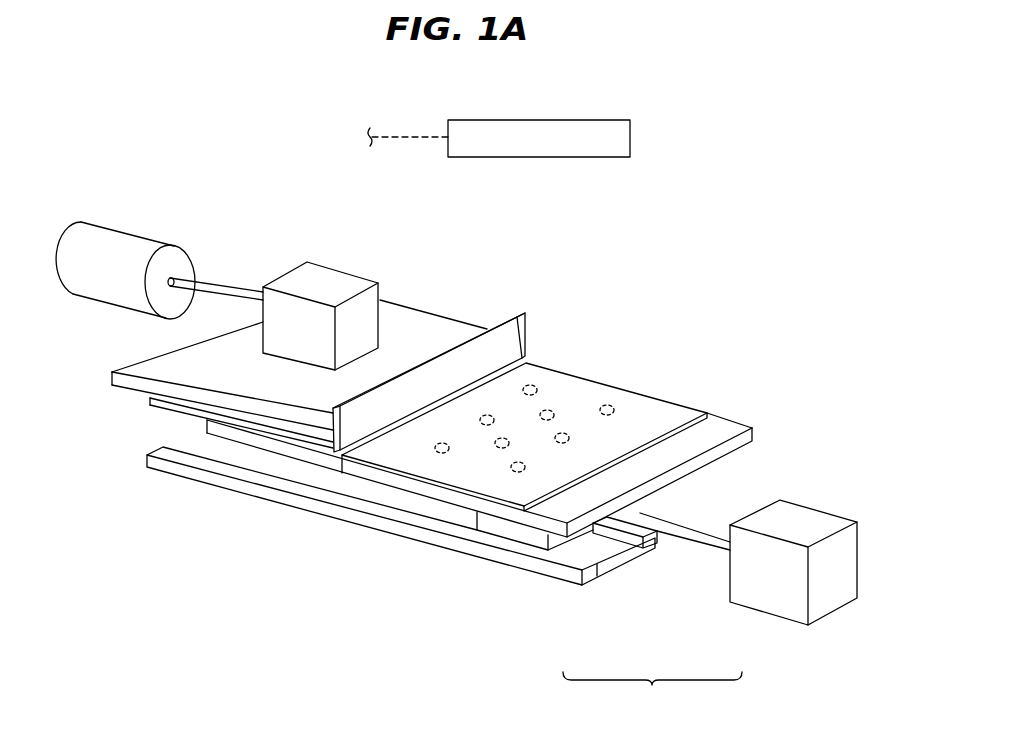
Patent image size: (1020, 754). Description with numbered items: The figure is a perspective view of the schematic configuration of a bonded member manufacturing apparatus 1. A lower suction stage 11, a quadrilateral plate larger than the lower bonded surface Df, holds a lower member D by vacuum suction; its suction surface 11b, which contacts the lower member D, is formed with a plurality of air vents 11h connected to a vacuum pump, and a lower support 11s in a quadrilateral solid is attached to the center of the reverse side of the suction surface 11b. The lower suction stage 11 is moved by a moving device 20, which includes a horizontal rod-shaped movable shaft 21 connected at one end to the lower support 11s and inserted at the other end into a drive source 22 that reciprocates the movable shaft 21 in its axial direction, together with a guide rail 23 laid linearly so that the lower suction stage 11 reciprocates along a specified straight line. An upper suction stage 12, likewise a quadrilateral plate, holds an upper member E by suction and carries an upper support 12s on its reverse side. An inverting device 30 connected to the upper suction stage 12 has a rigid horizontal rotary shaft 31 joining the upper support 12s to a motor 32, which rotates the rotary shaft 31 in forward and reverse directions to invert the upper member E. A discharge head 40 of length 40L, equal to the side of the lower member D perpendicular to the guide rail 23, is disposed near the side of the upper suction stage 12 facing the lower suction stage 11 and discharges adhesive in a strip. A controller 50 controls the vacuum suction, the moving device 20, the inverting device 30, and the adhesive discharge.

The bonded member manufacturing apparatus 1 is at (758, 110).
The controller 50 is at (630, 120).
The inverting device 30 is at (127, 197).
The motor 32 is at (160, 237).
The rotary shaft 31 is at (220, 284).
The upper support 12s is at (346, 268).
The upper suction stage 12 is at (425, 310).
The upper member E is at (158, 407).
The discharge head 40 is at (527, 330).
The length of discharge head 40L is at (518, 285).
The lower suction stage 11 is at (731, 418).
The lower member D is at (615, 380).
The lower bonded surface Df is at (645, 400).
The air vents 11h is at (538, 385).
The suction surface 11b is at (618, 447).
The lower support 11s is at (505, 532).
The guide rail 23 is at (573, 590).
The movable shaft 21 is at (690, 550).
The drive source 22 is at (745, 605).
The moving device 20 is at (652, 693).